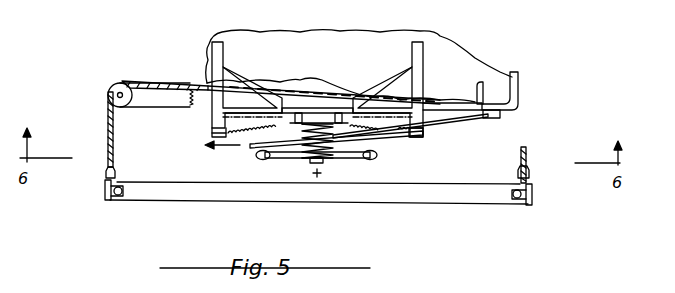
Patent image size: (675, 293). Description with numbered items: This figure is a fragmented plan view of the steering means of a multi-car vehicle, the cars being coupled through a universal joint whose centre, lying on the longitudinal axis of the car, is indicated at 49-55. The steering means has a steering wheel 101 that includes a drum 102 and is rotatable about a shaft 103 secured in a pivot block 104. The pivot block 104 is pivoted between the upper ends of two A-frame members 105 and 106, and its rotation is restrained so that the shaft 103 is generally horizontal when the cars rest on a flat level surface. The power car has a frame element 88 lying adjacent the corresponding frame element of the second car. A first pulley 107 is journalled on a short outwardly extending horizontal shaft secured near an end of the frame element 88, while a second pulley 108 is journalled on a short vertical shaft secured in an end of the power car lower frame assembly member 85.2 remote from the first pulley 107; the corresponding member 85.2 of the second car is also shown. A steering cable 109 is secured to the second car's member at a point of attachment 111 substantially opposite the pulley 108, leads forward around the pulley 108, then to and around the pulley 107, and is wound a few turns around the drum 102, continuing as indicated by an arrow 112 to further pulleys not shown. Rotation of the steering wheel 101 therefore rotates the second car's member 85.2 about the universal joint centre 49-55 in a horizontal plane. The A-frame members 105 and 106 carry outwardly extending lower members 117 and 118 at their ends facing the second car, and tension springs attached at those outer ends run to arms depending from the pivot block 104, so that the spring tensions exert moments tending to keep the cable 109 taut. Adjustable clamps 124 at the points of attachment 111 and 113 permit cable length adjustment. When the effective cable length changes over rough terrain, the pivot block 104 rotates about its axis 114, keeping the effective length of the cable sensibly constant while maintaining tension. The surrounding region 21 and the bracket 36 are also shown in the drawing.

The enclosure cloud 21 is at (333, 28).
The bracket 36 is at (535, 77).
The lower frame assembly member 85.2 is at (170, 60).
The frame element 88 is at (520, 107).
The steering wheel 101 is at (345, 160).
The drum 102 is at (335, 146).
The shaft 103 is at (328, 165).
The pivot block 104 is at (315, 117).
The A-frame member 105 is at (235, 62).
The A-frame member 106 is at (396, 68).
The first pulley 107 is at (492, 118).
The second pulley 108 is at (113, 84).
The steering cable 109 is at (107, 143).
The point of attachment 111 is at (108, 201).
The arrow 112 is at (236, 156).
The point of attachment 113 is at (527, 206).
The axis 114 is at (357, 108).
The outwardly extending lower member 117 is at (212, 127).
The outwardly extending lower member 118 is at (425, 137).
The adjustable clamps 124 is at (107, 173).
The universal joint centre 49-55 is at (314, 178).